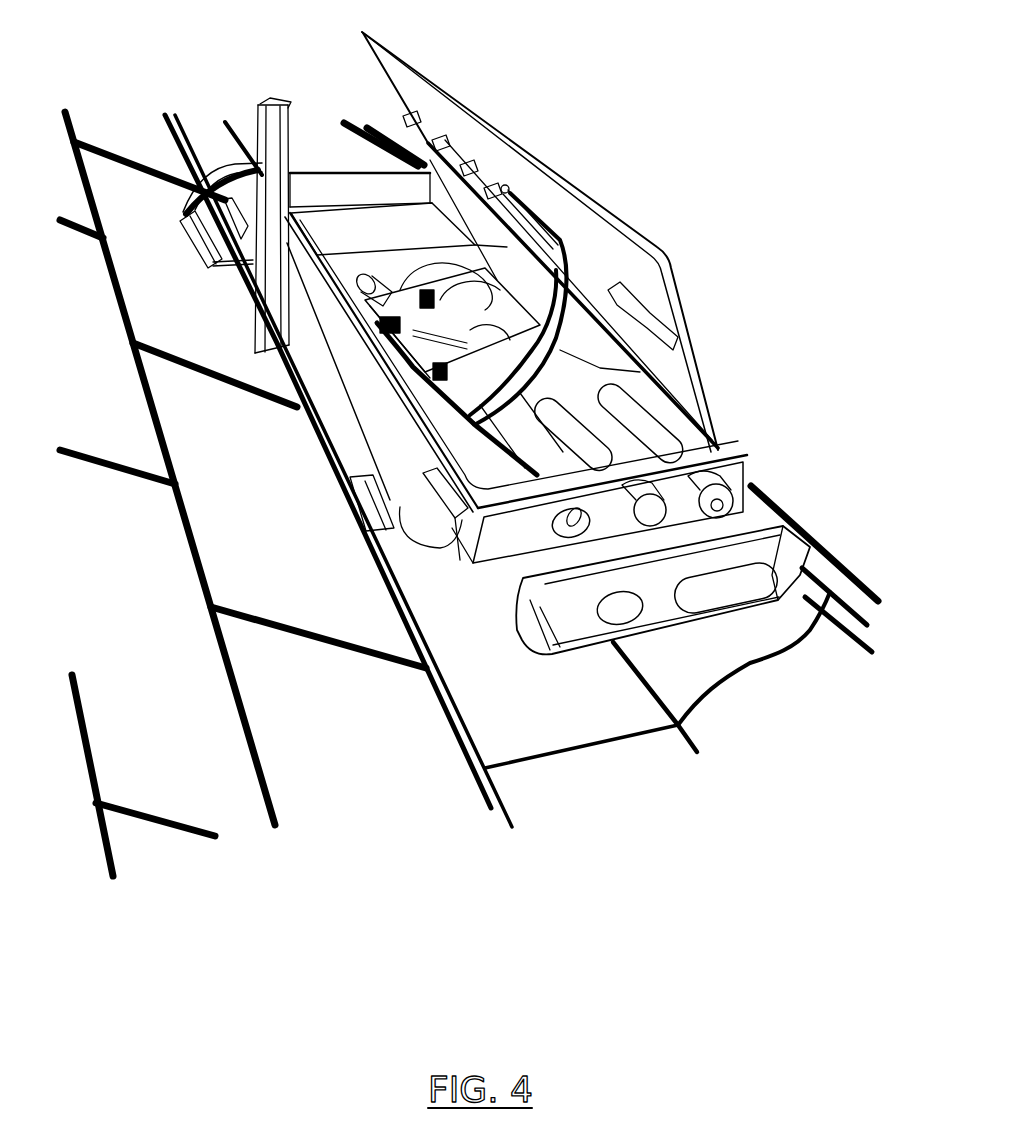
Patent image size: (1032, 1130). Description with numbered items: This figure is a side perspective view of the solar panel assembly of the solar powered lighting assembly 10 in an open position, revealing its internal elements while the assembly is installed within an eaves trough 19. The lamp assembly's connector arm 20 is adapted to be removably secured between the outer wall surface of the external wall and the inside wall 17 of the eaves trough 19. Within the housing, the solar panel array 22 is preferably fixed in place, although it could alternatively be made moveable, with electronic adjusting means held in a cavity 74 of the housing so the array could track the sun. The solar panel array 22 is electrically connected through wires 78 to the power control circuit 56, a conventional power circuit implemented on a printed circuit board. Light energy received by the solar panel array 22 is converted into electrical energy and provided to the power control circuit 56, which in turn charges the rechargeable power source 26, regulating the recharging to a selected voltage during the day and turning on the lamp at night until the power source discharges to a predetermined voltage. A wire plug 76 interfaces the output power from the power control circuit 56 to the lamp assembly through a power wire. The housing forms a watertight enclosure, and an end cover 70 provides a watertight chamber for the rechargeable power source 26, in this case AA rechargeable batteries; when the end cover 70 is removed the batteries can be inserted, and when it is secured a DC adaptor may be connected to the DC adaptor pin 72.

The solar powered lighting assembly 10 is at (676, 78).
The inside wall 17 is at (318, 448).
The eaves trough 19 is at (690, 652).
The connector arm 20 is at (262, 104).
The solar panel array 22 is at (507, 138).
The rechargeable power source 26 is at (600, 460).
The power control circuit 56 is at (405, 358).
The end cover 70 is at (775, 547).
The DC adaptor pin 72 is at (567, 513).
The cavity 74 is at (343, 225).
The wire plug 76 is at (197, 240).
The wires 78 is at (565, 278).